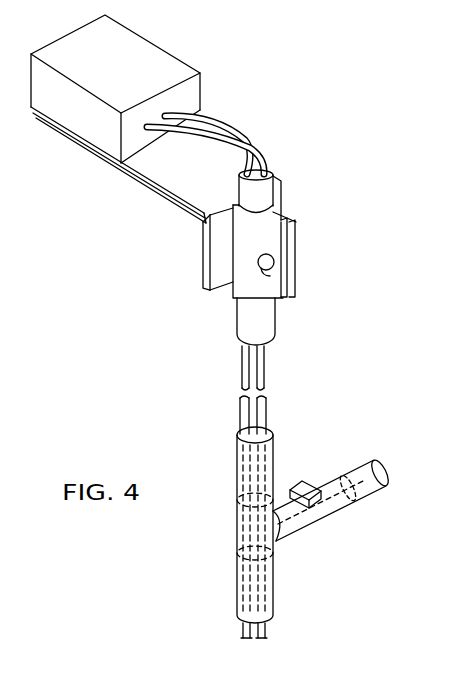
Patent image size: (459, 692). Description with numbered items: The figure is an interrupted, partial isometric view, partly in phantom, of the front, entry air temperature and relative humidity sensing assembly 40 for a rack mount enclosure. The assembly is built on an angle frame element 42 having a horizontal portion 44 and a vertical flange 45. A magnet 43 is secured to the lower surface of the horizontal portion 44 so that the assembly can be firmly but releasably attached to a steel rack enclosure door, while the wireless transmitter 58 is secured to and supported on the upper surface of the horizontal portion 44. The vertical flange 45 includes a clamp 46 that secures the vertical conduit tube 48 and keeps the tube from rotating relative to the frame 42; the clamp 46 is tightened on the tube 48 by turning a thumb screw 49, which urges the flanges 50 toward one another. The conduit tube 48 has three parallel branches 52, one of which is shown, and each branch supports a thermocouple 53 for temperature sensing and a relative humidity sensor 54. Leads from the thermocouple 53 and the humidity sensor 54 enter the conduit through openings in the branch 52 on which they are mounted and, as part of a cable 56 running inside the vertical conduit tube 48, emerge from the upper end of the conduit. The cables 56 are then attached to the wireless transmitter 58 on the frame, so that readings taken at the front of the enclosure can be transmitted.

The front, entry air temperature and relative humidity sensing assembly 40 is at (312, 139).
The angle frame element 42 is at (191, 190).
The magnet 43 is at (87, 158).
The horizontal portion 44 is at (155, 190).
The vertical flange 45 is at (203, 272).
The clamp 46 is at (243, 279).
The conduit tube 48 is at (275, 331).
The thumb screw 49 is at (270, 288).
The flanges 50 is at (297, 222).
The branches 52 is at (345, 500).
The thermocouple 53 is at (347, 470).
The relative humidity sensor 54 is at (304, 483).
The cable 56 is at (252, 137).
The wireless transmitter 58 is at (140, 33).